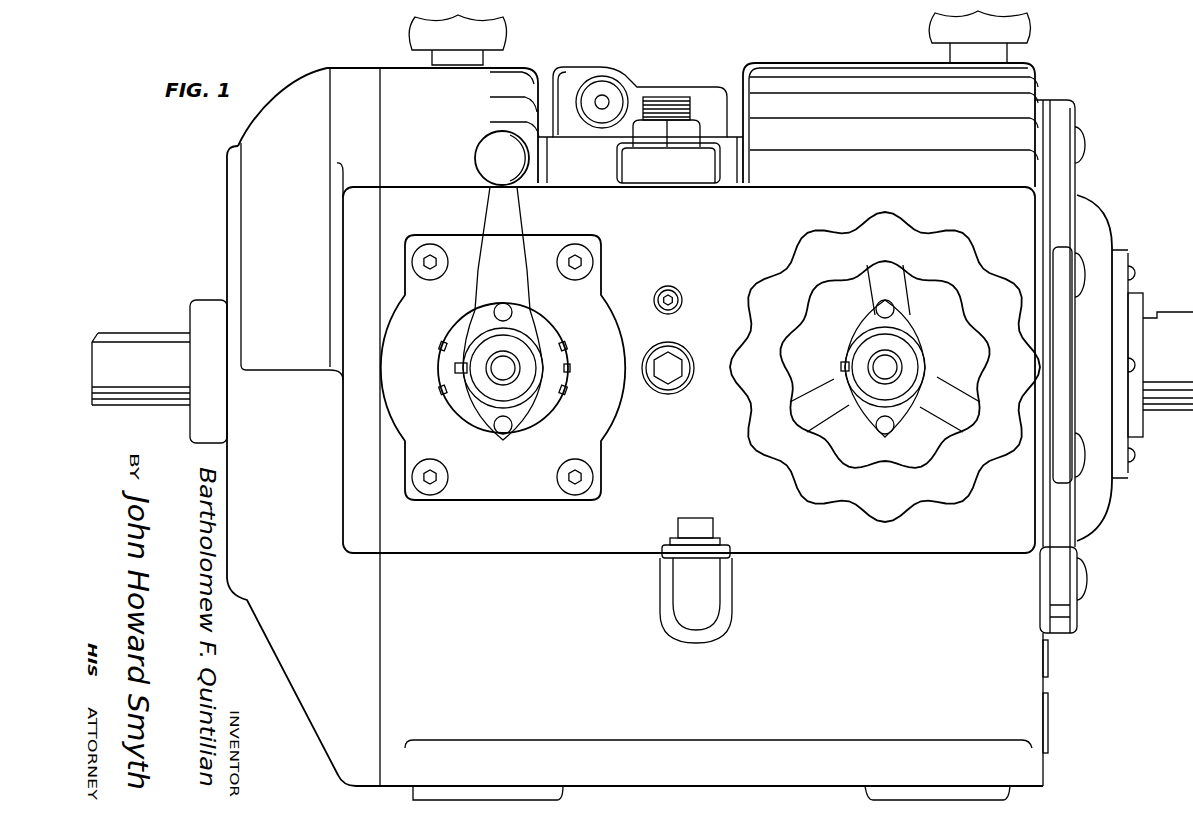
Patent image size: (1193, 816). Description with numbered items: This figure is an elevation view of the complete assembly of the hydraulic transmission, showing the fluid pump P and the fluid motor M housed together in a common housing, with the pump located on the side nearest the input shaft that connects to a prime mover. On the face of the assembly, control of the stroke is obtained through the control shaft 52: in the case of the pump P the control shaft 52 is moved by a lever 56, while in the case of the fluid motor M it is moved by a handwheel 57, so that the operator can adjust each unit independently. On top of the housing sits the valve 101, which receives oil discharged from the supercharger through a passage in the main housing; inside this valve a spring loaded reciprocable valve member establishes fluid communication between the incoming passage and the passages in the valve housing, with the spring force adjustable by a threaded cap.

The fluid pump P is at (413, 85).
The fluid motor M is at (862, 90).
The valve 101 is at (622, 74).
The control shaft 52 is at (500, 373).
The lever 56 is at (497, 220).
The handwheel 57 is at (883, 243).